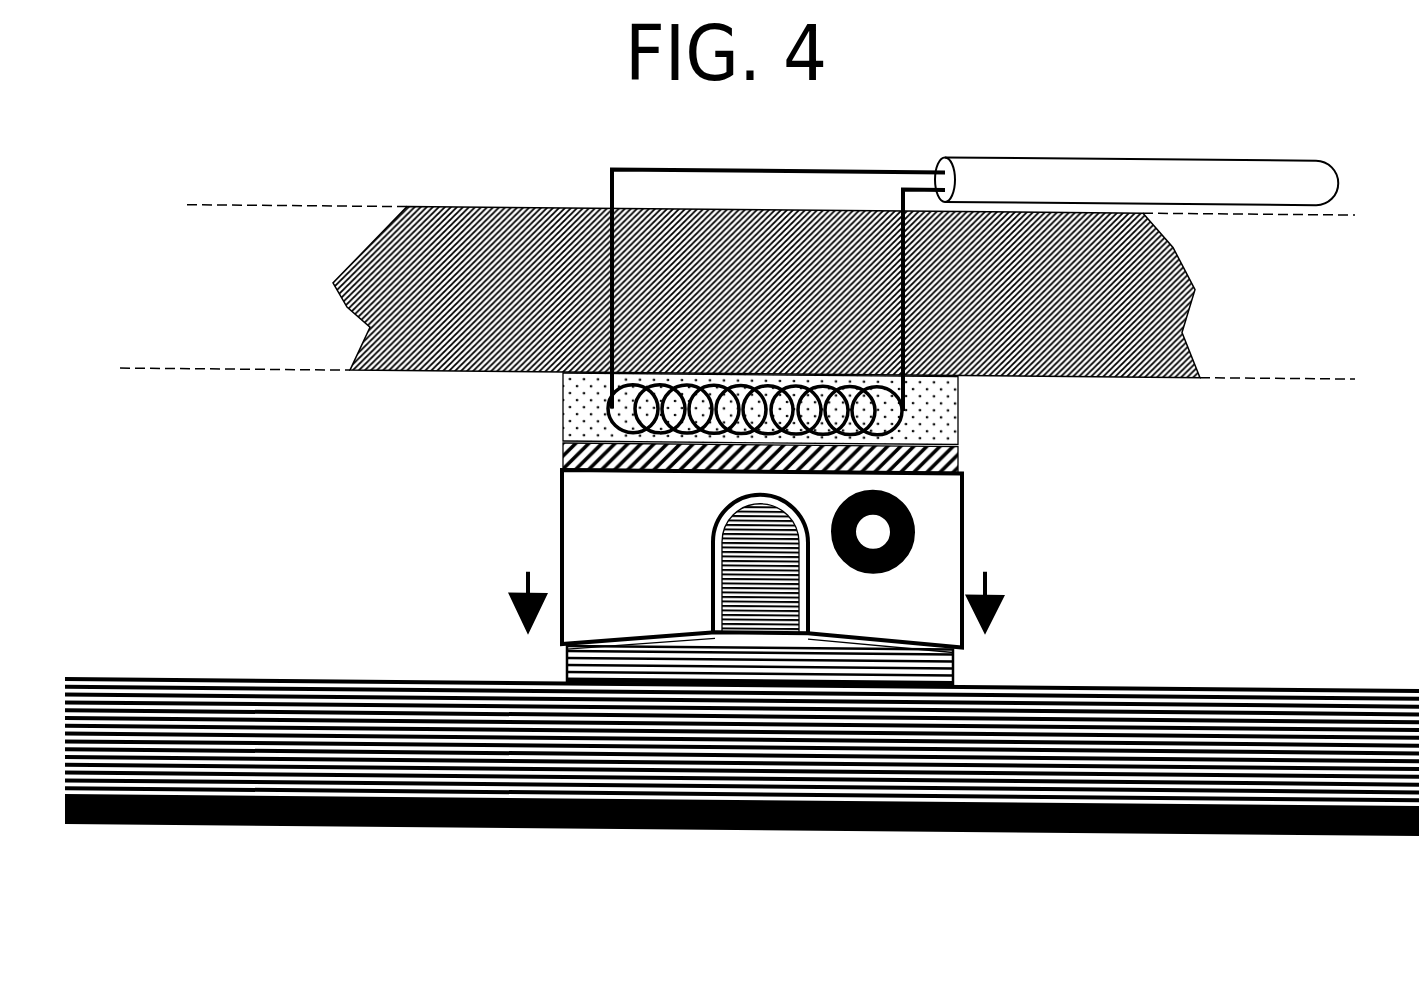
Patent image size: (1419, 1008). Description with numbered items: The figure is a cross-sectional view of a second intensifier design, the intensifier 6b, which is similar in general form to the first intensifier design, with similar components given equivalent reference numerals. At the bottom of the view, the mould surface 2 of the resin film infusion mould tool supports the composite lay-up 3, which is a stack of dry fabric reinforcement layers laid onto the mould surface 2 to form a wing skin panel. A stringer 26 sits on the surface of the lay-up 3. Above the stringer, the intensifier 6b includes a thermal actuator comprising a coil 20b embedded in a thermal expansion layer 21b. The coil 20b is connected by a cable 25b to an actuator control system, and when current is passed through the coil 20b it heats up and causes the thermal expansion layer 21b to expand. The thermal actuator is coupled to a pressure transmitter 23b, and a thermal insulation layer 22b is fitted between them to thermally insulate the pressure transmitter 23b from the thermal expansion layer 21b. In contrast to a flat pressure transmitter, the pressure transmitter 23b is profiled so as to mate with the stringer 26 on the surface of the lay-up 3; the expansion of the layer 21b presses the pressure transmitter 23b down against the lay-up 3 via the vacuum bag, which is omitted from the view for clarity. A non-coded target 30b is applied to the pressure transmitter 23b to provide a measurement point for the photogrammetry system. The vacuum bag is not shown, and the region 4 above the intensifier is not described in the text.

The tissue layer 4 is at (636, 255).
The coil 20b is at (783, 398).
The cable 25b is at (1140, 173).
The thermal expansion layer 21b is at (577, 414).
The thermal insulation layer 22b is at (930, 460).
The pressure transmitter 23b is at (575, 552).
The non-coded target 30b is at (917, 546).
The intensifier 6b is at (413, 566).
The stringer 26 is at (856, 666).
The mould surface 2 is at (185, 795).
The composite lay-up 3 is at (680, 749).